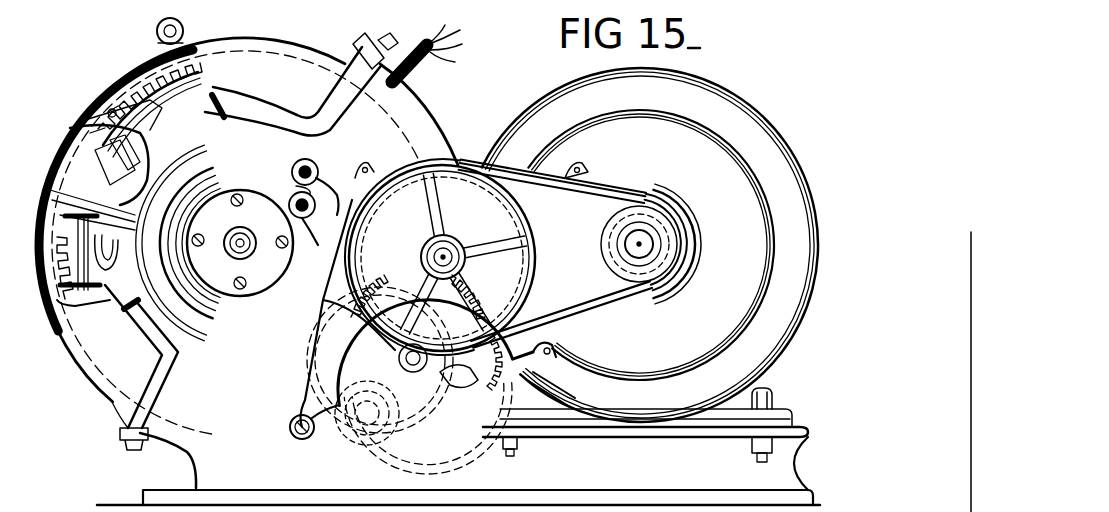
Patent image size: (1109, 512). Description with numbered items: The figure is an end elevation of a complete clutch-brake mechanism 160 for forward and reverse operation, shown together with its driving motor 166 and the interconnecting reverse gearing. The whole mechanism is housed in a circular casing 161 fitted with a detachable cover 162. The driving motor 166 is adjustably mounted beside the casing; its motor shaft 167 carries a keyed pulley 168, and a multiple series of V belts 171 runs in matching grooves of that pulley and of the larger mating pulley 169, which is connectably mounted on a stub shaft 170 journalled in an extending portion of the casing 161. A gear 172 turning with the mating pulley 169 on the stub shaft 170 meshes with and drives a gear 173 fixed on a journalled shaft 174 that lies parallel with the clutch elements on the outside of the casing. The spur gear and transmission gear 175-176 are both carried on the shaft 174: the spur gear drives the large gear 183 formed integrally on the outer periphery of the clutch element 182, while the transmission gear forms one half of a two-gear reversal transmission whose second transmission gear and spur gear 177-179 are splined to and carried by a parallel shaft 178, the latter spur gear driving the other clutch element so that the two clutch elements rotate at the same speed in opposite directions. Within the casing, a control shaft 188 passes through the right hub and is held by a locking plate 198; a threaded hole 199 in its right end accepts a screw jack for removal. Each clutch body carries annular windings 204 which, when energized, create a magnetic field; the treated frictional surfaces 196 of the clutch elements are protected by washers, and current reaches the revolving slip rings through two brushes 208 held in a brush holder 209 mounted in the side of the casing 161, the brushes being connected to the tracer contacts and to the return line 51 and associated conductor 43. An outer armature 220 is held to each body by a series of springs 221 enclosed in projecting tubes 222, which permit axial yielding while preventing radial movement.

The conductor 43 is at (314, 232).
The return line 51 is at (333, 187).
The clutch-brake mechanism 160 is at (100, 437).
The circular casing 161 is at (417, 125).
The detachable cover 162 is at (278, 43).
The driving motor 166 is at (745, 106).
The motor shaft 167 is at (639, 241).
The pulley 168 is at (604, 250).
The mating pulley 169 is at (538, 217).
The stub shaft 170 is at (440, 255).
The V belts 171 is at (538, 312).
The gear 172 is at (463, 267).
The gear 173 is at (330, 302).
The journalled shaft 174 is at (372, 367).
The spur gear and transmission gear 175-176 is at (407, 442).
The second transmission gear and spur gear 177-179 is at (330, 435).
The shaft 178 is at (310, 397).
The clutch element 182 is at (78, 283).
The large gear 183 is at (193, 78).
The control shaft 188 is at (230, 246).
The frictional surfaces 196 is at (100, 143).
The locking plate 198 is at (245, 190).
The threaded hole 199 is at (236, 252).
The windings 204 is at (95, 170).
The brushes 208 is at (292, 176).
The brush holder 209 is at (312, 165).
The outer armature 220 is at (95, 135).
The springs 221 is at (110, 110).
The projecting tubes 222 is at (118, 110).